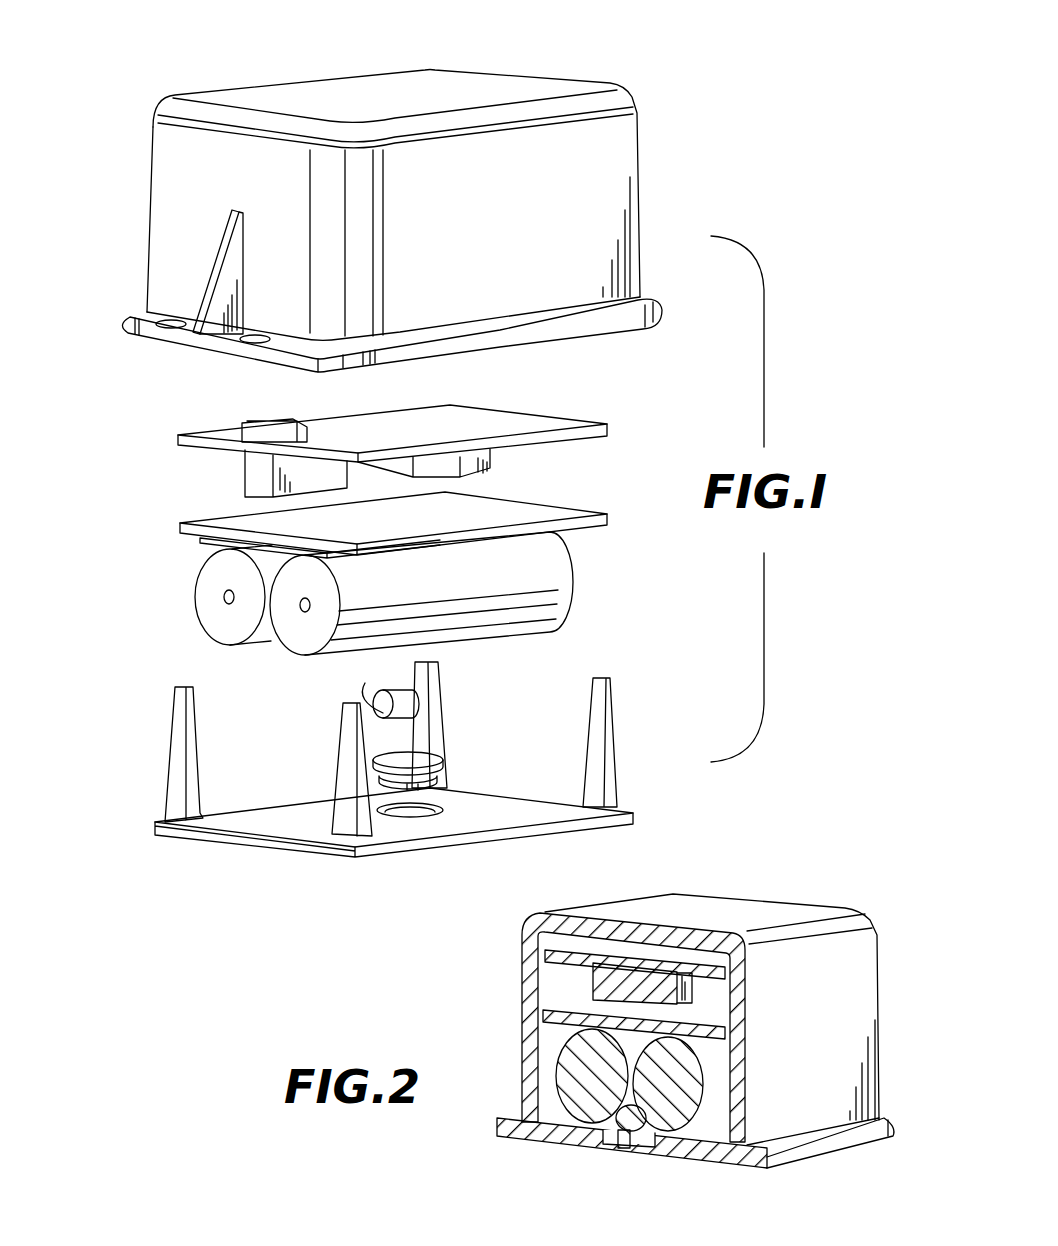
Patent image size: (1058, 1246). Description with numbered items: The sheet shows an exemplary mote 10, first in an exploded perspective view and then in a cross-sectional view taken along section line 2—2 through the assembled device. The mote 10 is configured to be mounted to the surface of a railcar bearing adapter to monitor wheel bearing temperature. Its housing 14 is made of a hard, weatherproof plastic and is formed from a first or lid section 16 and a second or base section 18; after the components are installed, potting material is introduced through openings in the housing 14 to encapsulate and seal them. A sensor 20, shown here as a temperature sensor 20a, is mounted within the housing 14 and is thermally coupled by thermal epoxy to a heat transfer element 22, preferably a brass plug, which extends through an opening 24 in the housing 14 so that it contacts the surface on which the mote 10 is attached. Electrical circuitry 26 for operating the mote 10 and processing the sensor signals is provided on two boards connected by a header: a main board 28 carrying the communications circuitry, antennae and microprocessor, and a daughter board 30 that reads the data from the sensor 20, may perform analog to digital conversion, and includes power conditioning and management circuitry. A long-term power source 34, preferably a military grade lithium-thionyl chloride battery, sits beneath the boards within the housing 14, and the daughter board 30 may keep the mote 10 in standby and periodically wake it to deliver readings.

In FIG. 1, the section line 2- 2 is at (220, 61).
In FIG. 1, the mote 10 is at (112, 152).
In FIG. 2, the mote 10 is at (842, 868).
In FIG. 1, the housing 14 is at (633, 207).
In FIG. 2, the housing 14 is at (827, 1148).
In FIG. 1, the lid section 16 is at (150, 255).
In FIG. 1, the base section 18 is at (180, 835).
In FIG. 2, the base section 18 is at (543, 1140).
In FIG. 1, the sensor 20 is at (407, 703).
In FIG. 2, the sensor 20 is at (605, 1130).
In FIG. 1, the temperature sensor 20a is at (373, 717).
In FIG. 1, the heat transfer element 22 is at (417, 753).
In FIG. 2, the heat transfer element 22 is at (623, 1142).
In FIG. 1, the opening 24 is at (403, 817).
In FIG. 2, the opening 24 is at (653, 1142).
In FIG. 1, the electrical circuitry 26 is at (163, 420).
In FIG. 1, the main board 28 is at (583, 420).
In FIG. 2, the main board 28 is at (570, 952).
In FIG. 1, the daughter board 30 is at (540, 510).
In FIG. 2, the daughter board 30 is at (567, 1015).
In FIG. 1, the long-term power source 34 is at (563, 577).
In FIG. 2, the long-term power source 34 is at (633, 1082).